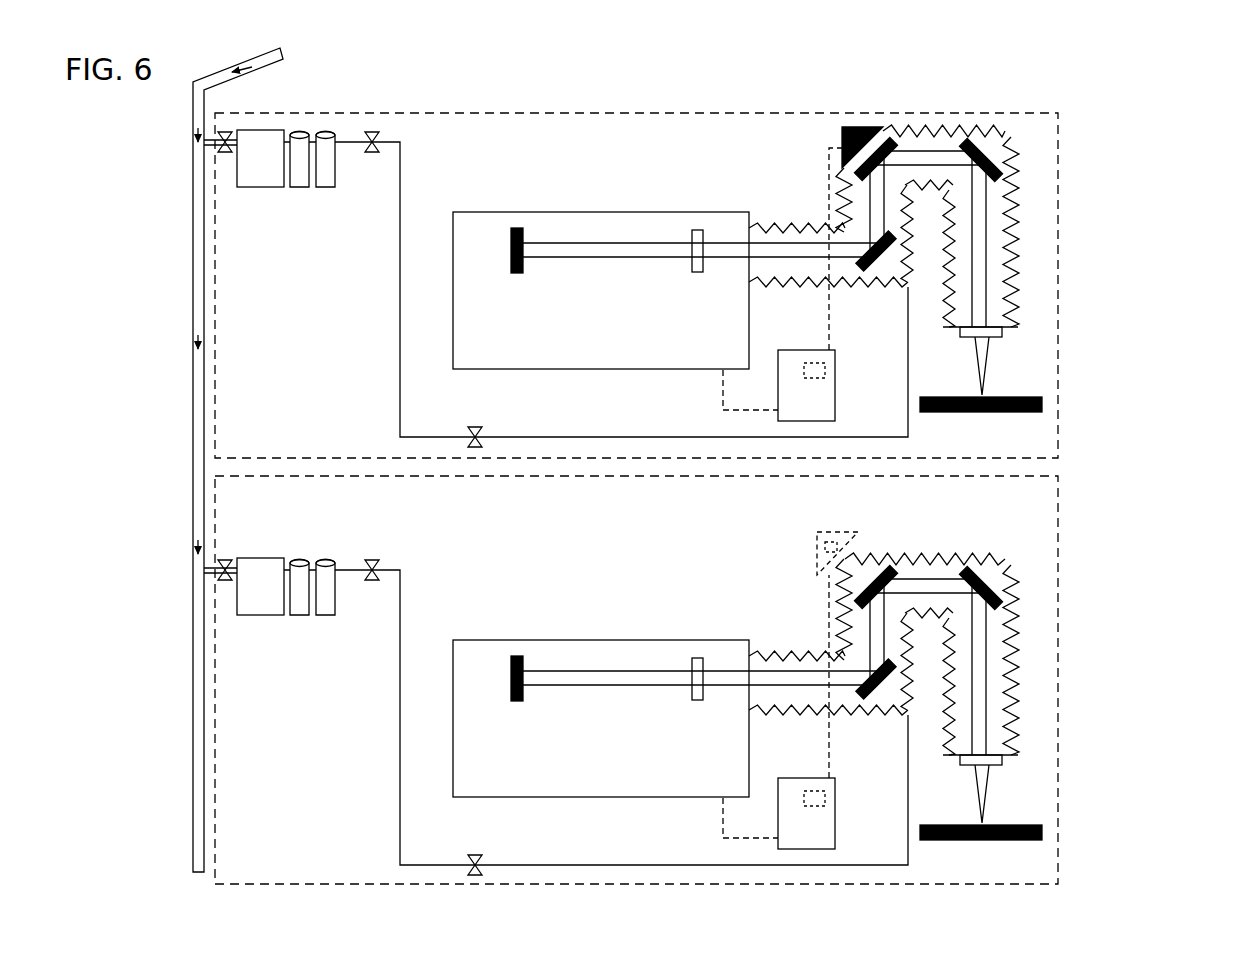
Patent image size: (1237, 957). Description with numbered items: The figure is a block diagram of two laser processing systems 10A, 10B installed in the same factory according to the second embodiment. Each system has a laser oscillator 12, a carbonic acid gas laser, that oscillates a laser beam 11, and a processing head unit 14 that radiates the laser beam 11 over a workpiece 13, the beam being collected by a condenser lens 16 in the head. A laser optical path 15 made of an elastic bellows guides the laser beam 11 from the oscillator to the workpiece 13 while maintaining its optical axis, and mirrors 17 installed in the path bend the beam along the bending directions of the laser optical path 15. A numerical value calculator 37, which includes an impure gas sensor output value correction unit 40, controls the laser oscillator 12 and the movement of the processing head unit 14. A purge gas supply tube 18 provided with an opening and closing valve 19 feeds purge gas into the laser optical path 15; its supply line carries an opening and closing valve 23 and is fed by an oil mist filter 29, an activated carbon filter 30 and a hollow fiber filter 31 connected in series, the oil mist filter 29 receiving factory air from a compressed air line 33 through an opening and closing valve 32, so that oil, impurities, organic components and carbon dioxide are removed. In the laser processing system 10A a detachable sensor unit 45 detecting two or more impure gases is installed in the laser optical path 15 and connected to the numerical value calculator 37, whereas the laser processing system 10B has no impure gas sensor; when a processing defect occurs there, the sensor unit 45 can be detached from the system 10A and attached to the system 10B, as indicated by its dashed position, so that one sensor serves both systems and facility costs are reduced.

The laser processing system 10A is at (1062, 147).
The laser processing system 10B is at (1062, 575).
The laser beam 11 is at (720, 246).
The laser oscillator 12 is at (600, 211).
The workpiece 13 is at (1032, 413).
The processing head unit 14 is at (1016, 316).
The laser optical path 15 is at (1012, 240).
The condenser lens 16 is at (1000, 338).
The mirrors 17 is at (984, 150).
The purge gas supply tube 18 is at (625, 436).
The opening and closing valve 19 is at (474, 426).
The opening and closing valve 23 is at (372, 154).
The oil mist filter 29 is at (262, 189).
The activated carbon filter 30 is at (299, 189).
The hollow fiber filter 31 is at (330, 189).
The opening and closing valve 32 is at (226, 154).
The compressed air line 33 is at (288, 55).
The numerical value calculator 37 is at (838, 412).
The impure gas sensor output value correction unit 40 is at (826, 376).
The sensor unit 45 is at (857, 126).